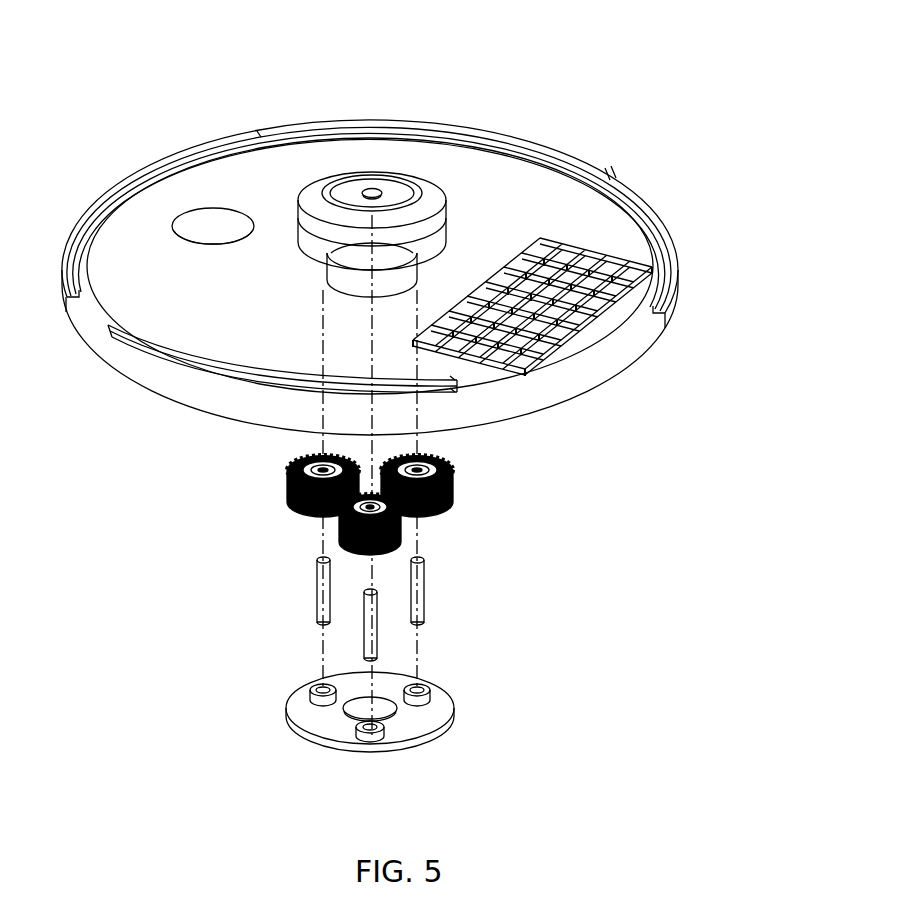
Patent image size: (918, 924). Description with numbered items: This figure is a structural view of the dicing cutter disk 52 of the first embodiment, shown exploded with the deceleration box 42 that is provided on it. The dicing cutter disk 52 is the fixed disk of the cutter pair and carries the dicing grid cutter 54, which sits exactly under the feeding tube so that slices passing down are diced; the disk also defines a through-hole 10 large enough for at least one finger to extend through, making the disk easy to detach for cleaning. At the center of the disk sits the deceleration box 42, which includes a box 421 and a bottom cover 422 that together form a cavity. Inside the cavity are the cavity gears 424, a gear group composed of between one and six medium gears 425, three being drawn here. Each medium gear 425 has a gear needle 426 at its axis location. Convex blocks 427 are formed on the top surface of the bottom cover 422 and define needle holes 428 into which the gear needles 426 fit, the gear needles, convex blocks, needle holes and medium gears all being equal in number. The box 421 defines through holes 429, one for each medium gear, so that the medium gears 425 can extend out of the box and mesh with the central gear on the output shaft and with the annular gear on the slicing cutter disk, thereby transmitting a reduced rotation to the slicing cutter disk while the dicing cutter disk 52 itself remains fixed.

The through-hole 10 is at (203, 232).
The deceleration box 42 is at (437, 621).
The dicing cutter disk 52 is at (230, 325).
The dicing grid cutter 54 is at (550, 347).
The box 421 is at (408, 235).
The bottom cover 422 is at (380, 723).
The cavity gears 424 is at (352, 517).
The medium gear 425 is at (455, 481).
The gear needle 426 is at (417, 588).
The convex block 427 is at (326, 692).
The needle hole 428 is at (415, 685).
The through hole 429 is at (393, 277).